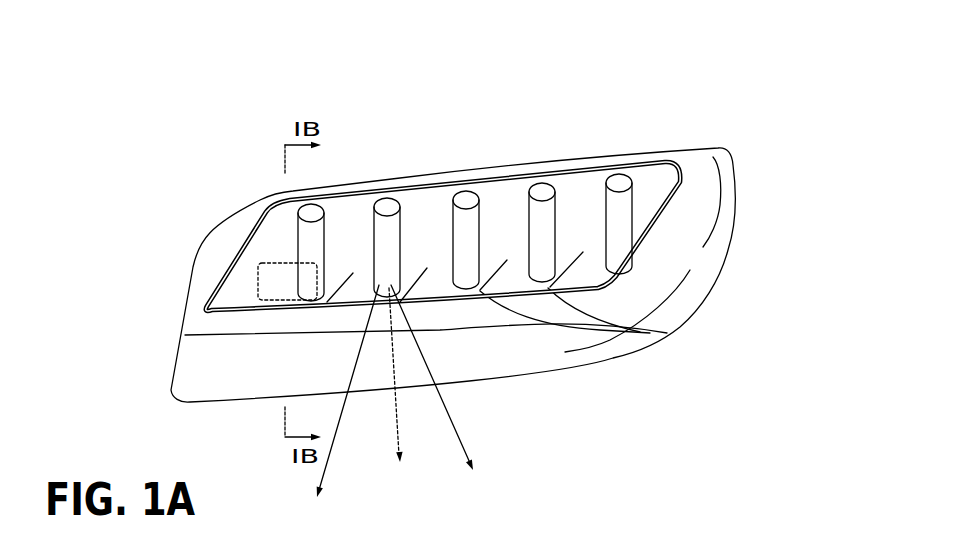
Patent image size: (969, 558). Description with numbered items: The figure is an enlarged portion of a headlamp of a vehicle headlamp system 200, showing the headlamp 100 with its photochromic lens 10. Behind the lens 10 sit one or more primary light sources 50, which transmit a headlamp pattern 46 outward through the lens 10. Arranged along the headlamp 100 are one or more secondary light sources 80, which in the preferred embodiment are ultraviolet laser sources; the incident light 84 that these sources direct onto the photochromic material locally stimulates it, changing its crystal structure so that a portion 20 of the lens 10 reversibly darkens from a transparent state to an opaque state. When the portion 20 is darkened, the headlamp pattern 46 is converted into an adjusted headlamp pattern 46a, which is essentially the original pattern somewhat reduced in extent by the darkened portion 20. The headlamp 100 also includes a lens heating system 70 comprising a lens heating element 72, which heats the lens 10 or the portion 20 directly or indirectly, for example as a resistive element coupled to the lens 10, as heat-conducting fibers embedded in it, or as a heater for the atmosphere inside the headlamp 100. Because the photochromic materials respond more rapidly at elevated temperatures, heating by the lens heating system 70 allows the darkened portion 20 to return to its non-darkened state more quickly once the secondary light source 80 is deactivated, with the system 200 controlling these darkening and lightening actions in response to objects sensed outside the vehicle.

The photochromic lens 10 is at (643, 155).
The portion of the lens 20 is at (287, 320).
The headlamp pattern 46 is at (343, 422).
The adjusted headlamp pattern 46a is at (446, 518).
The primary light source 50 is at (667, 333).
The lens heating system 70 is at (693, 185).
The lens heating element 72 is at (653, 235).
The secondary light source 80 is at (308, 233).
The incident light 84 is at (293, 238).
The headlamp 100 is at (577, 157).
The headlamp system 200 is at (612, 133).